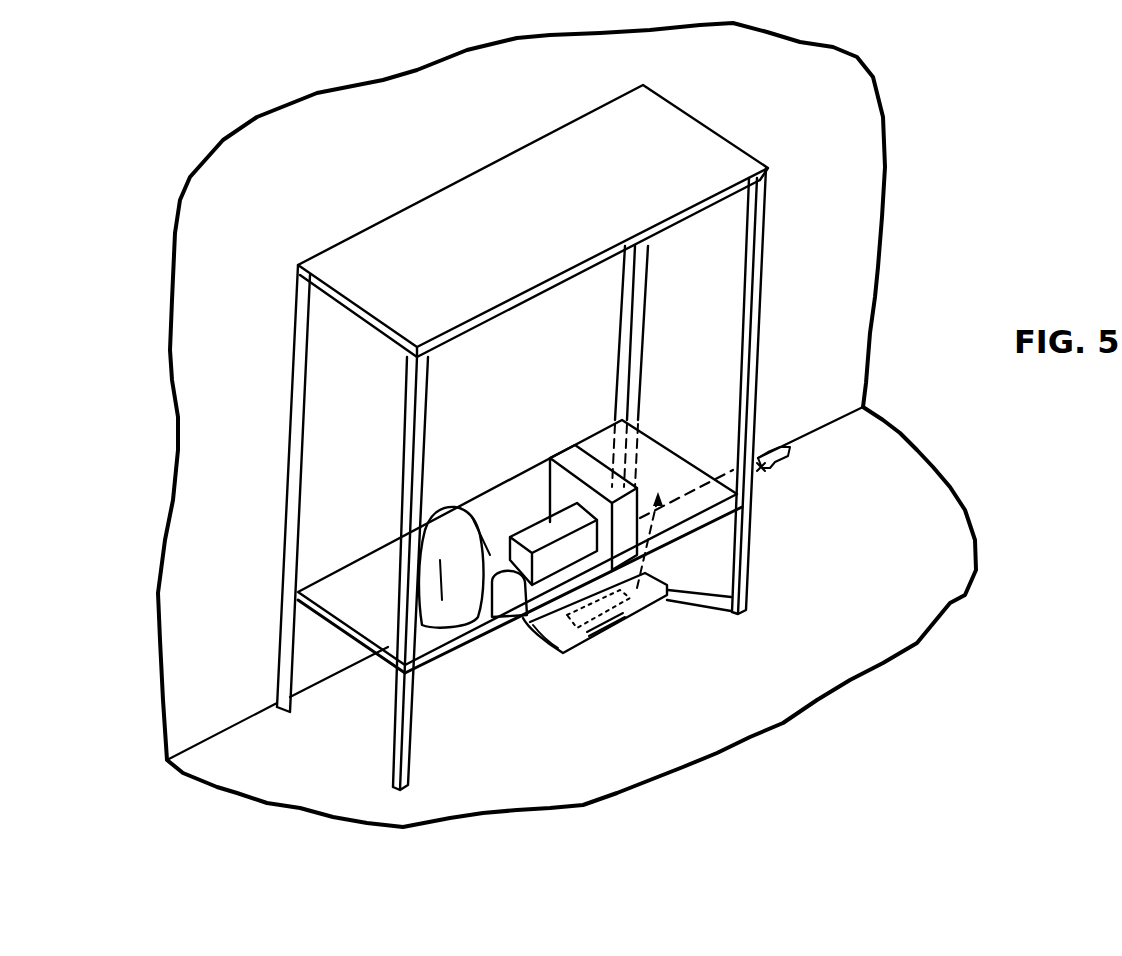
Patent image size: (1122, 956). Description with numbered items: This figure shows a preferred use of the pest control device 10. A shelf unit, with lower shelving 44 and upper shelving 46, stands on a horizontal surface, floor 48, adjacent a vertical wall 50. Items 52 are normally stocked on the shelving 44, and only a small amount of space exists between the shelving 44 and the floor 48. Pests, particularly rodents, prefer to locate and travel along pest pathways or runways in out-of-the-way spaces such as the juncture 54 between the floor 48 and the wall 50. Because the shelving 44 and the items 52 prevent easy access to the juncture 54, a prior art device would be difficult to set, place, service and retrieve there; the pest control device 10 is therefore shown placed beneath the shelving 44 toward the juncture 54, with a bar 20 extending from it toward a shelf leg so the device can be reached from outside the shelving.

The pest control device 10 is at (622, 627).
The bar 20 is at (710, 604).
The shelving 44 is at (360, 567).
The shelving 46 is at (378, 238).
The floor 48 is at (870, 553).
The wall 50 is at (242, 567).
The items 52 is at (490, 548).
The juncture 54 is at (820, 427).